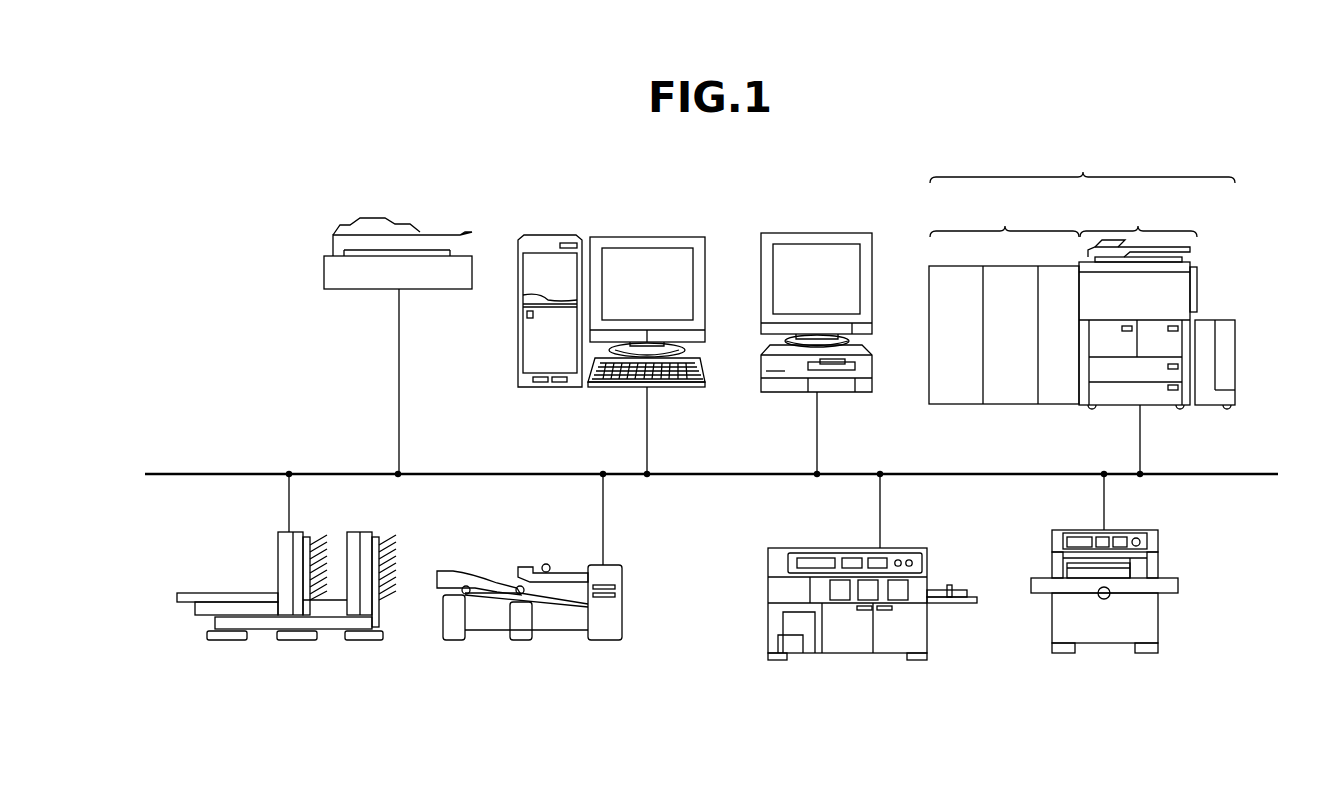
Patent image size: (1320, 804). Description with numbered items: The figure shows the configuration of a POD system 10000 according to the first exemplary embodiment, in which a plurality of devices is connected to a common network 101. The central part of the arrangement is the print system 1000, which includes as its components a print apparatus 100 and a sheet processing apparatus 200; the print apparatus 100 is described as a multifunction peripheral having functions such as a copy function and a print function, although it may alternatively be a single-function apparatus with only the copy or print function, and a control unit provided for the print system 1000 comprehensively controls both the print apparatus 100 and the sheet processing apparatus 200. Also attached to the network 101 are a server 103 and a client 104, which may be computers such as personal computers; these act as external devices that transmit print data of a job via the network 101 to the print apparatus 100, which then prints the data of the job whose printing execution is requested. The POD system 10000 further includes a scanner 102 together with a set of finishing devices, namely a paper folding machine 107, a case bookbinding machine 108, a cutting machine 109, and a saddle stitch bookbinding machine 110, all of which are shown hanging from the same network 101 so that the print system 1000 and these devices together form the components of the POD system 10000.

The print apparatus 100 is at (1157, 333).
The sheet processing apparatus 200 is at (1004, 297).
The print system 1000 is at (1082, 163).
The network 101 is at (226, 474).
The scanner 102 is at (429, 234).
The server 103 is at (642, 234).
The client 104 is at (820, 234).
The paper folding machine 107 is at (563, 632).
The case bookbinding machine 108 is at (847, 655).
The cutting machine 109 is at (1104, 646).
The saddle stitch bookbinding machine 110 is at (261, 632).
The POD system 10000 is at (733, 736).